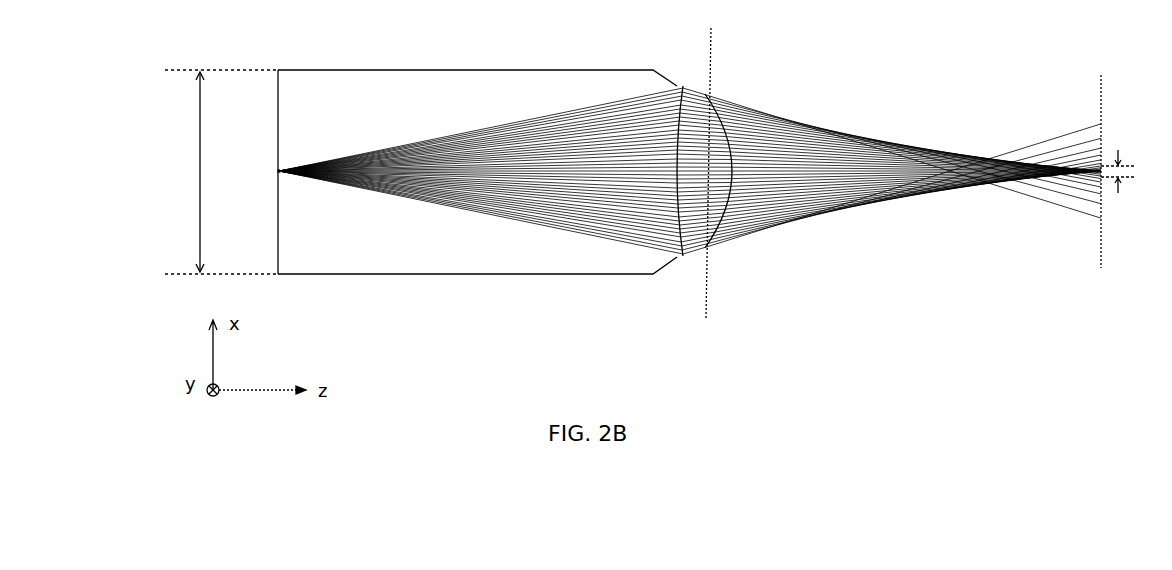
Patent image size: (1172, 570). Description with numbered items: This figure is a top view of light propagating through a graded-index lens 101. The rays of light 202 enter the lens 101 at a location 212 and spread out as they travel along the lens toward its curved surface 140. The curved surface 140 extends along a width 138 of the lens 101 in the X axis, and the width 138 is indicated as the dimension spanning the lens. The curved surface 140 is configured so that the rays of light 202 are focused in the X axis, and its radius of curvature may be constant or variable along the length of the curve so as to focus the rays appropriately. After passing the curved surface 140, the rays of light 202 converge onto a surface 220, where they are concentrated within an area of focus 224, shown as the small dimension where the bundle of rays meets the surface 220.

The lens 101 is at (432, 282).
The width 138 is at (198, 130).
The location 212 is at (277, 168).
The rays of light 202 is at (382, 139).
The curved surface 140 is at (682, 85).
The surface 220 is at (1100, 232).
The area of focus 224 is at (1120, 150).